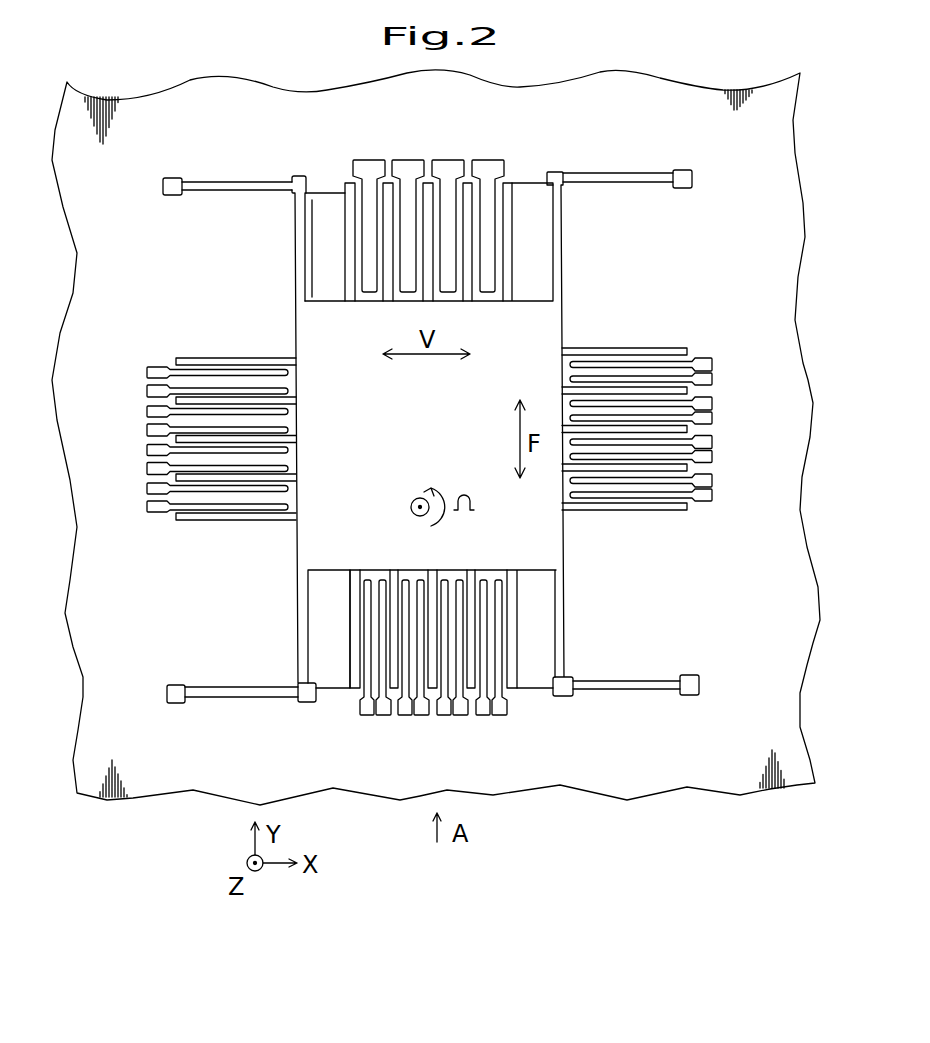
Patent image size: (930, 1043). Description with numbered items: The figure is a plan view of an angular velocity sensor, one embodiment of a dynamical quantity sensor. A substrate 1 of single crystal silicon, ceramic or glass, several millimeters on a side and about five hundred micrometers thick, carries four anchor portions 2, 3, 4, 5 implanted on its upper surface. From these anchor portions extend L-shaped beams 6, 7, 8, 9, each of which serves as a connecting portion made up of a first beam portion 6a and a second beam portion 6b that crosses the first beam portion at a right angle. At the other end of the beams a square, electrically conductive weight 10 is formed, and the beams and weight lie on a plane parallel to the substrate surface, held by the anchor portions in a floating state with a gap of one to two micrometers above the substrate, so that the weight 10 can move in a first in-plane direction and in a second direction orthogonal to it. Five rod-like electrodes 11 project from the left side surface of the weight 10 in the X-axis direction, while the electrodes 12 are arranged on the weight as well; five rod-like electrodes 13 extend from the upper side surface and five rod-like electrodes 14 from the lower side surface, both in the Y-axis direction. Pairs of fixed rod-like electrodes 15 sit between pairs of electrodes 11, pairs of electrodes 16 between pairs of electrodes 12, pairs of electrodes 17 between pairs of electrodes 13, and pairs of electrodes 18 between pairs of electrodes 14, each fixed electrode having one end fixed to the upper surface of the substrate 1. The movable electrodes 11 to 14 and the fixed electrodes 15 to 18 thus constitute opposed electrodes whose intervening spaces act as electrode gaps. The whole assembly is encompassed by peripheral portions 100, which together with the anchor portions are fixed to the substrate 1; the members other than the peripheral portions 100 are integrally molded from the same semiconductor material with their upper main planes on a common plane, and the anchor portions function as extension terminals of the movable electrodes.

The substrate 1 is at (802, 732).
The anchor portion 2 is at (172, 197).
The anchor portion 3 is at (175, 705).
The anchor portion 4 is at (690, 697).
The anchor portion 5 is at (684, 190).
The L-shaped beam 6 is at (295, 237).
The first beam portion 6a is at (328, 240).
The second beam portion 6b is at (288, 176).
The L-shaped beam 7 is at (298, 640).
The L-shaped beam 8 is at (565, 637).
The L-shaped beam 9 is at (563, 248).
The weight 10 is at (563, 552).
The rod-like electrodes 11 is at (190, 357).
The rod-like electrodes 12 is at (646, 347).
The rod-like electrodes 13 is at (345, 170).
The rod-like electrodes 14 is at (352, 686).
The rod-like electrodes 15 is at (147, 390).
The rod-like electrodes 16 is at (713, 380).
The rod-like electrodes 17 is at (350, 182).
The rod-like electrodes 18 is at (365, 716).
The peripheral portions 100 is at (498, 166).